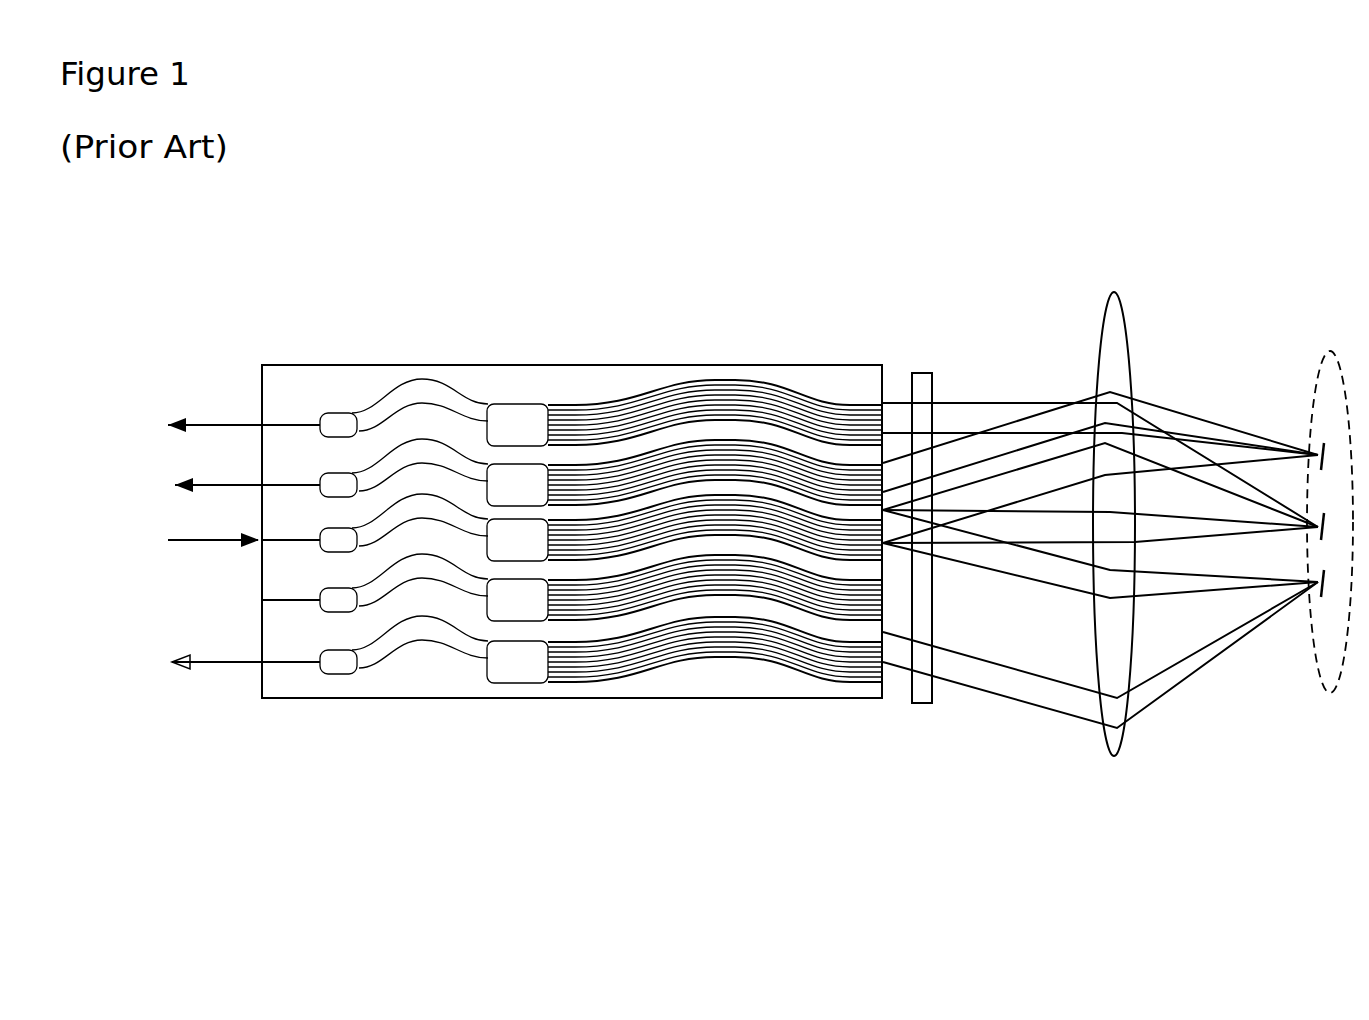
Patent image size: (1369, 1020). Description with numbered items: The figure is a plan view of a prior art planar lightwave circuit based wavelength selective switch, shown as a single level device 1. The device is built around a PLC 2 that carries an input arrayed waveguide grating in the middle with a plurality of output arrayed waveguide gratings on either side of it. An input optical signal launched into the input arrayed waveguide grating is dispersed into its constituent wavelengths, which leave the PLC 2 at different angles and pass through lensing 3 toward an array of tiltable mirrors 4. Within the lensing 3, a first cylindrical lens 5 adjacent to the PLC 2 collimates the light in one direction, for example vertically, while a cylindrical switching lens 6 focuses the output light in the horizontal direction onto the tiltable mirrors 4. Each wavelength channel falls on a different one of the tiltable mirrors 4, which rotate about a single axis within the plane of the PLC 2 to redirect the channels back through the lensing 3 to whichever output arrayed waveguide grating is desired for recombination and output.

The single level device 1 is at (525, 493).
The PLC 2 is at (723, 674).
The lensing 3 is at (1006, 531).
The array of tiltable mirrors 4 is at (1318, 378).
The first cylindrical lens 5 is at (930, 374).
The cylindrical switching lens 6 is at (1115, 305).